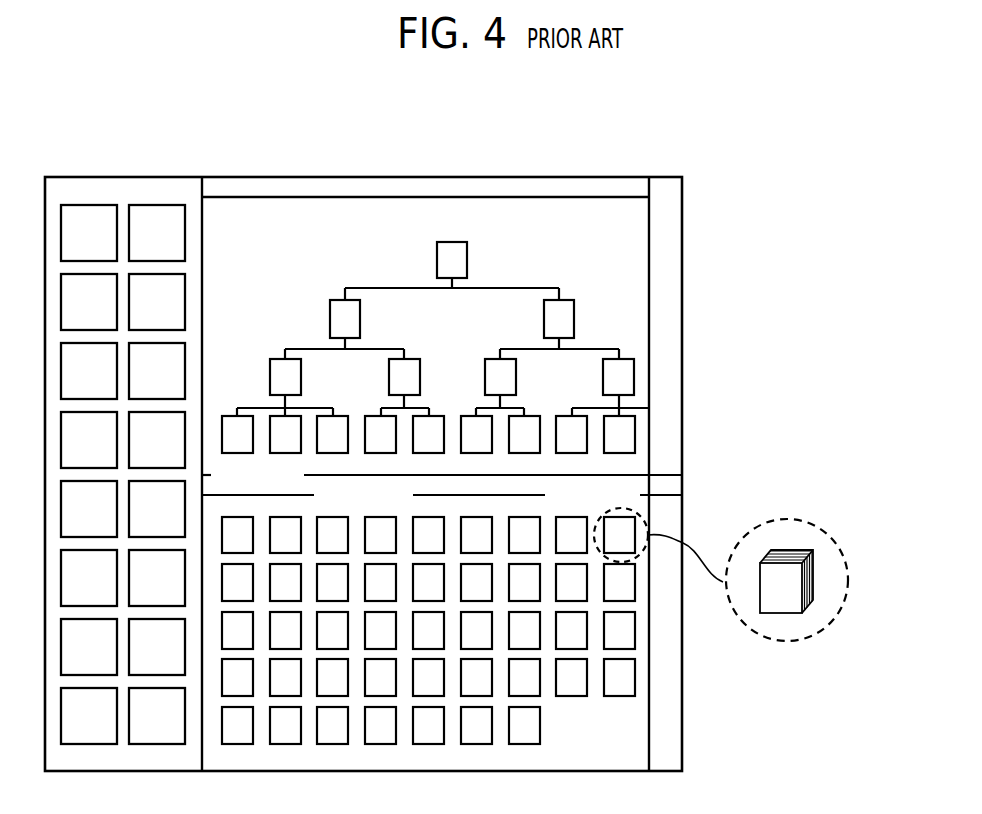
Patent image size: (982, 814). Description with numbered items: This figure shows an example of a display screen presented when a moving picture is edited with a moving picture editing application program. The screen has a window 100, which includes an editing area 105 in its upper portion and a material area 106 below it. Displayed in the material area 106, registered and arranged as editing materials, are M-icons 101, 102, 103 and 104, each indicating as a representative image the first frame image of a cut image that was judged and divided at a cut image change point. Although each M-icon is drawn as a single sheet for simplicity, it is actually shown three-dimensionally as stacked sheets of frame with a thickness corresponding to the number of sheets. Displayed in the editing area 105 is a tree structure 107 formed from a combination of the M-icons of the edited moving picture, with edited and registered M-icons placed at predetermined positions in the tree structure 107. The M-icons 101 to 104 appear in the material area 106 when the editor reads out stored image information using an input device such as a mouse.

The window 100 is at (508, 177).
The M-icon 101 is at (238, 515).
The M-icon 102 is at (285, 515).
The M-icon 103 is at (522, 515).
The M-icon 104 is at (540, 722).
The editing area 105 is at (630, 265).
The material area 106 is at (643, 508).
The tree structure 107 is at (410, 275).